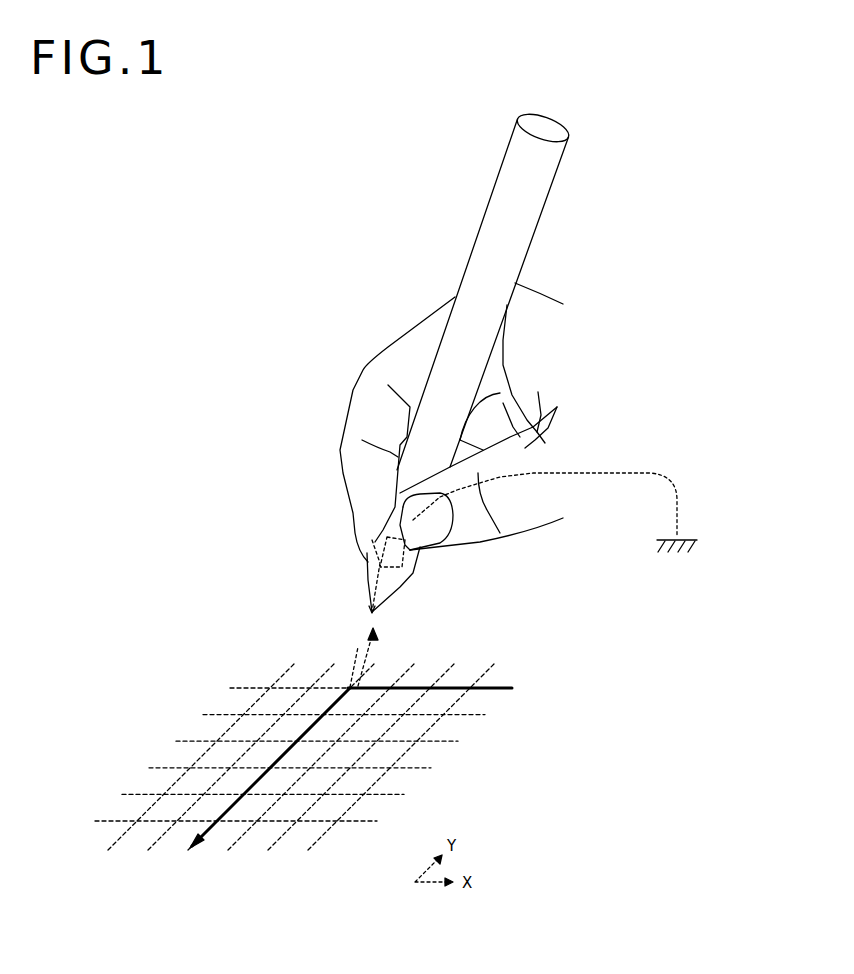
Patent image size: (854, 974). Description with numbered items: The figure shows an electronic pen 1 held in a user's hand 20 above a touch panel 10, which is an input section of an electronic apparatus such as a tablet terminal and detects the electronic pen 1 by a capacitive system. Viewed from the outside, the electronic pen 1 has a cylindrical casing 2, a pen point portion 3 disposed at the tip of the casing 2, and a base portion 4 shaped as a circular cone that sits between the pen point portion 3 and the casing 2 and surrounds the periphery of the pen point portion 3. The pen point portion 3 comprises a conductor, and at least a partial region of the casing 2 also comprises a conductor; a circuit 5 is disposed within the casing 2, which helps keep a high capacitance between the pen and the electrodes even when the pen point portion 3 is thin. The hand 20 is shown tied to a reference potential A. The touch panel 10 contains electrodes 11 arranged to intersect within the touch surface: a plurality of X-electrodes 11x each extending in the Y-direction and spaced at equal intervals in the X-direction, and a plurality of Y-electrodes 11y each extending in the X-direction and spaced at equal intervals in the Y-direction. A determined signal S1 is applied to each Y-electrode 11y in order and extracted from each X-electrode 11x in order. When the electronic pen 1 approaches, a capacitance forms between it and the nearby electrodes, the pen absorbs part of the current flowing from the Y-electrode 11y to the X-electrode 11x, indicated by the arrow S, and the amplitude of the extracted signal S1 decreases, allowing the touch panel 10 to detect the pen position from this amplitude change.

The electronic pen 1 is at (533, 207).
The cylindrical casing 2 is at (527, 240).
The pen point portion 3 is at (370, 608).
The base portion 4 is at (367, 578).
The circuit 5 is at (368, 551).
The touch panel 10 is at (331, 764).
The electrode 11 is at (567, 730).
The X-electrodes 11x is at (197, 767).
The Y-electrodes 11y is at (238, 685).
The hand of user 20 is at (358, 388).
The ground (human body) A is at (677, 510).
The signal S is at (374, 657).
The signal S1 is at (562, 712).